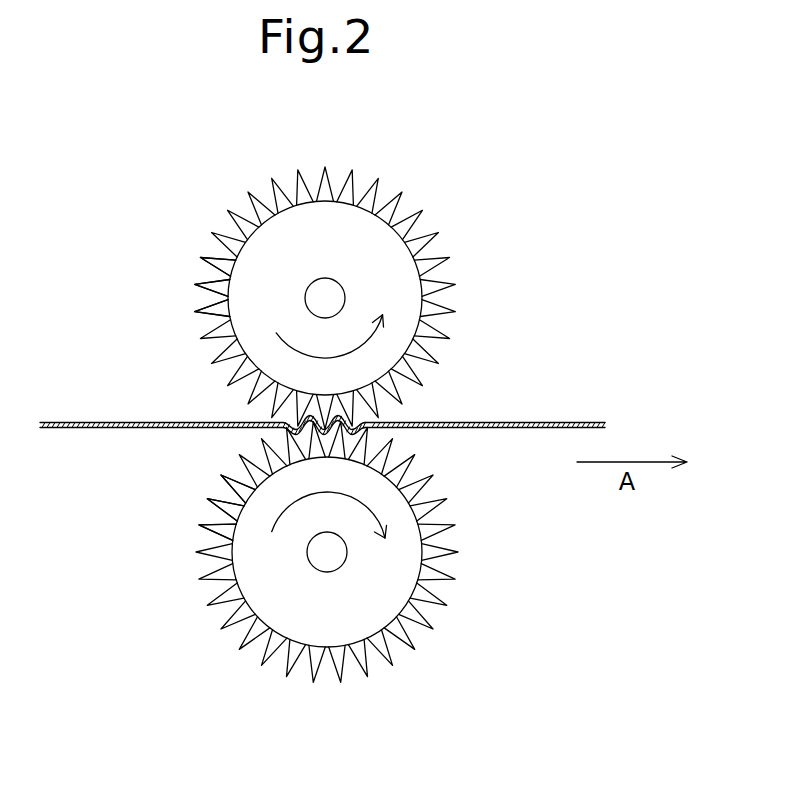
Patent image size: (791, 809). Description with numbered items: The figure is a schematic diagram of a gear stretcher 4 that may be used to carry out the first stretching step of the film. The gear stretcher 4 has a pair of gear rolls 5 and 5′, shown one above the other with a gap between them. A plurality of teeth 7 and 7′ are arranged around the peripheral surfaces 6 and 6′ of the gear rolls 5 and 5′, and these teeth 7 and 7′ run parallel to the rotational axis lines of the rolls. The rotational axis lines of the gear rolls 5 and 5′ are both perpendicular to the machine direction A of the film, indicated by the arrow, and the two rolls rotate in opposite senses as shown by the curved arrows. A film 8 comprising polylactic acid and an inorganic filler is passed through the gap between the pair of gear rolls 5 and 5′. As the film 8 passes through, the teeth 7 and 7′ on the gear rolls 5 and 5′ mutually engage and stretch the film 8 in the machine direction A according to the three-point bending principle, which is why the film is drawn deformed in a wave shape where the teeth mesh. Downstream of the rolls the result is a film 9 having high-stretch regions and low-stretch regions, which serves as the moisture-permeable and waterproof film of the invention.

The gear stretcher 4 is at (107, 233).
The gear roll 5 is at (413, 277).
The peripheral surface 6 is at (230, 228).
The teeth 7 is at (203, 315).
The gear roll 5′ is at (335, 635).
The peripheral surface 6′ is at (210, 593).
The teeth 7′ is at (200, 527).
The film 8 is at (85, 422).
The film 9 is at (587, 423).